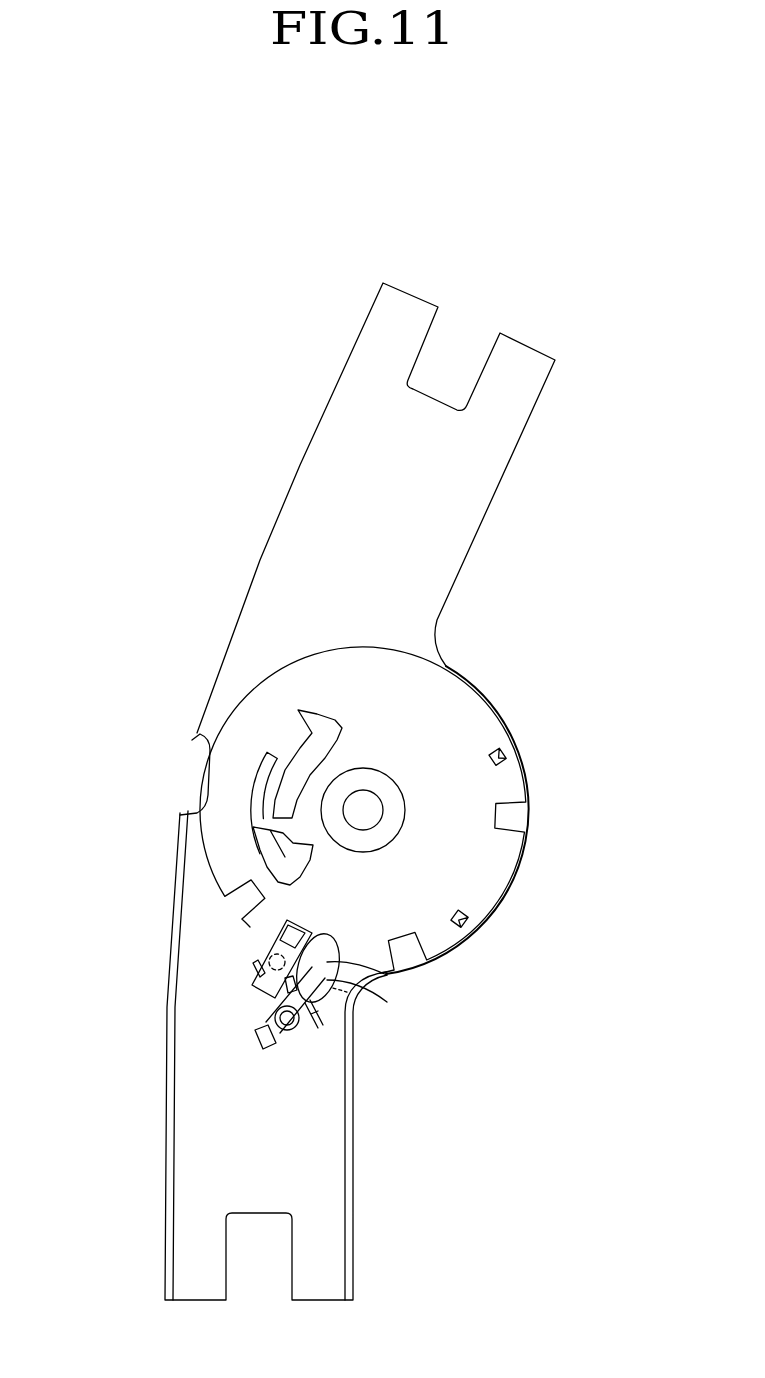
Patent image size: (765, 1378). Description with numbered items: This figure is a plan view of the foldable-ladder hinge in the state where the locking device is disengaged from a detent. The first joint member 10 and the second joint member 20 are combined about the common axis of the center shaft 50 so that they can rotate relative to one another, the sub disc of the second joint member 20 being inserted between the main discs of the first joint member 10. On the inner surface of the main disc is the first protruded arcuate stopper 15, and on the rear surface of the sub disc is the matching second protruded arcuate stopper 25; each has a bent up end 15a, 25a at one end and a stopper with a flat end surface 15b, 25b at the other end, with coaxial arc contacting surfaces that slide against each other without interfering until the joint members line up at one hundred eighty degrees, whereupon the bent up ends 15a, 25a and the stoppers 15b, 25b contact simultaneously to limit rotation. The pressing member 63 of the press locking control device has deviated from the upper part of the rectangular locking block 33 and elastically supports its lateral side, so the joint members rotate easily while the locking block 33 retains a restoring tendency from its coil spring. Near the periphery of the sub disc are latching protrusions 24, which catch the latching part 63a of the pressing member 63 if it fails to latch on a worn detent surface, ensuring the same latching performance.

The first joint member 10 is at (159, 1064).
The first protruded arcuate stopper 15 is at (190, 765).
The bent up end 15a is at (266, 826).
The stopper having flat end surface 15b is at (268, 755).
The second joint member 20 is at (492, 500).
The latching protrusions 24 is at (463, 923).
The second protruded arcuate stopper 25 is at (217, 721).
The bent up end 25a is at (298, 715).
The stopper having flat end surface 25b is at (272, 783).
The locking block 33 is at (252, 978).
The center shaft 50 is at (368, 810).
The pressing member 63 is at (387, 975).
The latching part 63a is at (387, 1002).